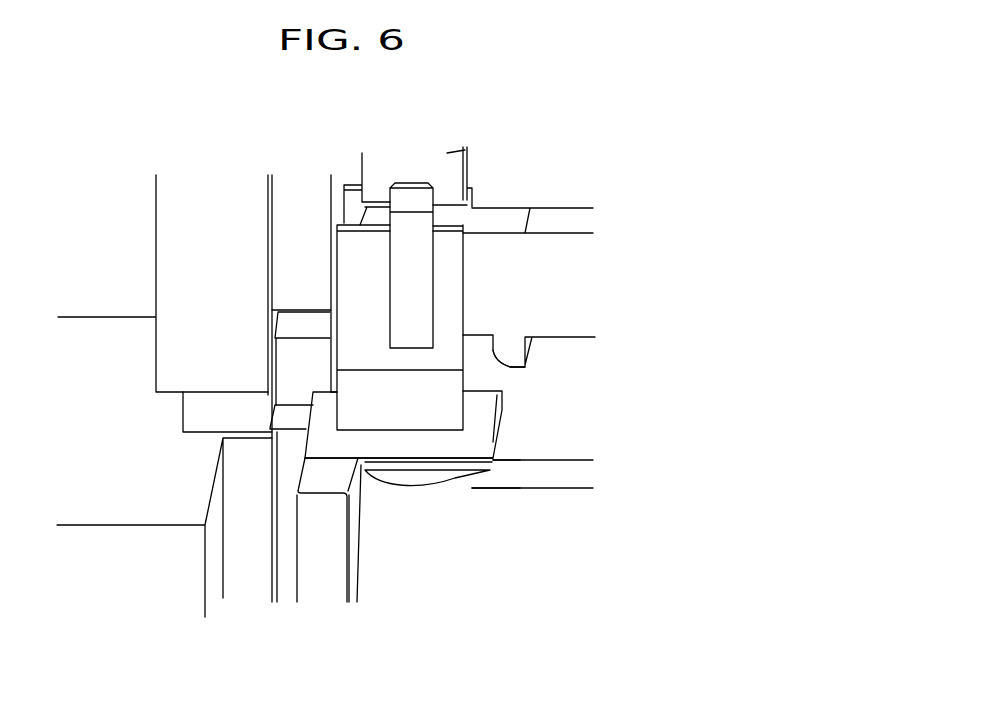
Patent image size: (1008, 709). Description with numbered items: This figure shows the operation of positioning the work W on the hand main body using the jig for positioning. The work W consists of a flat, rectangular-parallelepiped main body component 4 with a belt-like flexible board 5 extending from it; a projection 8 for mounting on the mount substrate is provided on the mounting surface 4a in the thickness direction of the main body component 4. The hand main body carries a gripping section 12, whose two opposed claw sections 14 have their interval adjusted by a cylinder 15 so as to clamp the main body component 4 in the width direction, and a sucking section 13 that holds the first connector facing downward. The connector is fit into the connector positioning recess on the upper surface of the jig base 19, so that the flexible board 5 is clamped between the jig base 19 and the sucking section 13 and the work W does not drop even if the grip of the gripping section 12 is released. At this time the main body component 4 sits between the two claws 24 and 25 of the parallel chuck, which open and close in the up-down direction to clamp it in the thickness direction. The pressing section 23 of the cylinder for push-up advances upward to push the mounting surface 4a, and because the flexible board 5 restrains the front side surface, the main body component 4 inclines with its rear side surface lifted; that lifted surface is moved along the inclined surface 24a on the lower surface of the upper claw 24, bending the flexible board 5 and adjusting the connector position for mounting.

The main body component 4 is at (385, 447).
The mounting surface 4a is at (333, 458).
The flexible board 5 is at (295, 413).
The projection 8 is at (413, 467).
The gripping section 12 is at (475, 172).
The sucking section 13 is at (158, 413).
The claw sections 14 is at (478, 203).
The cylinder 15 is at (470, 150).
The jig base 19 is at (93, 350).
The pressing section 23 is at (312, 577).
The claw 24 is at (558, 305).
The inclined surface 24a is at (507, 367).
The claw 25 is at (515, 523).
The work W is at (474, 472).